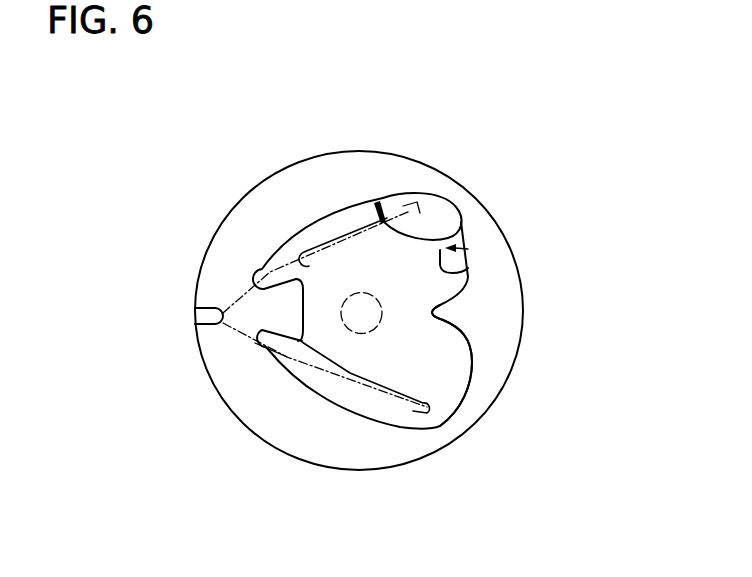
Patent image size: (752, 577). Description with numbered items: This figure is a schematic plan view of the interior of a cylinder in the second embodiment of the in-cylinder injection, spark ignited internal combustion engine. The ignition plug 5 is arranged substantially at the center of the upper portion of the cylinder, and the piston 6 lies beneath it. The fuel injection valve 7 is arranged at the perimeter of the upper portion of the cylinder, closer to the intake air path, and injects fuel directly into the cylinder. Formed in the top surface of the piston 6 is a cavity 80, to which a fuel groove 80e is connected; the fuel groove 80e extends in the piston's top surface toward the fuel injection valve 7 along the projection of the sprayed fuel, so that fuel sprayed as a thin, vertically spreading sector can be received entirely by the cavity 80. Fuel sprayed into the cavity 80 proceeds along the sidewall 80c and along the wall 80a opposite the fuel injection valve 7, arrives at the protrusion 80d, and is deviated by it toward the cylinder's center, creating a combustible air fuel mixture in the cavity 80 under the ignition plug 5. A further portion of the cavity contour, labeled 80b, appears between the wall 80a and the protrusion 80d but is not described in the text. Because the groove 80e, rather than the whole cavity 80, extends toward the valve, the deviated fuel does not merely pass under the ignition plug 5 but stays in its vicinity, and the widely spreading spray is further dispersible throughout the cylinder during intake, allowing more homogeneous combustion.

The ignition plug 5 is at (358, 333).
The piston 6 is at (312, 440).
The fuel injection valve 7 is at (198, 338).
The cavity 80 is at (355, 178).
The wall 80a is at (467, 277).
The waist portion 80b is at (450, 308).
The sidewall 80c is at (443, 233).
The protrusion 80d is at (430, 363).
The fuel groove 80e is at (277, 270).